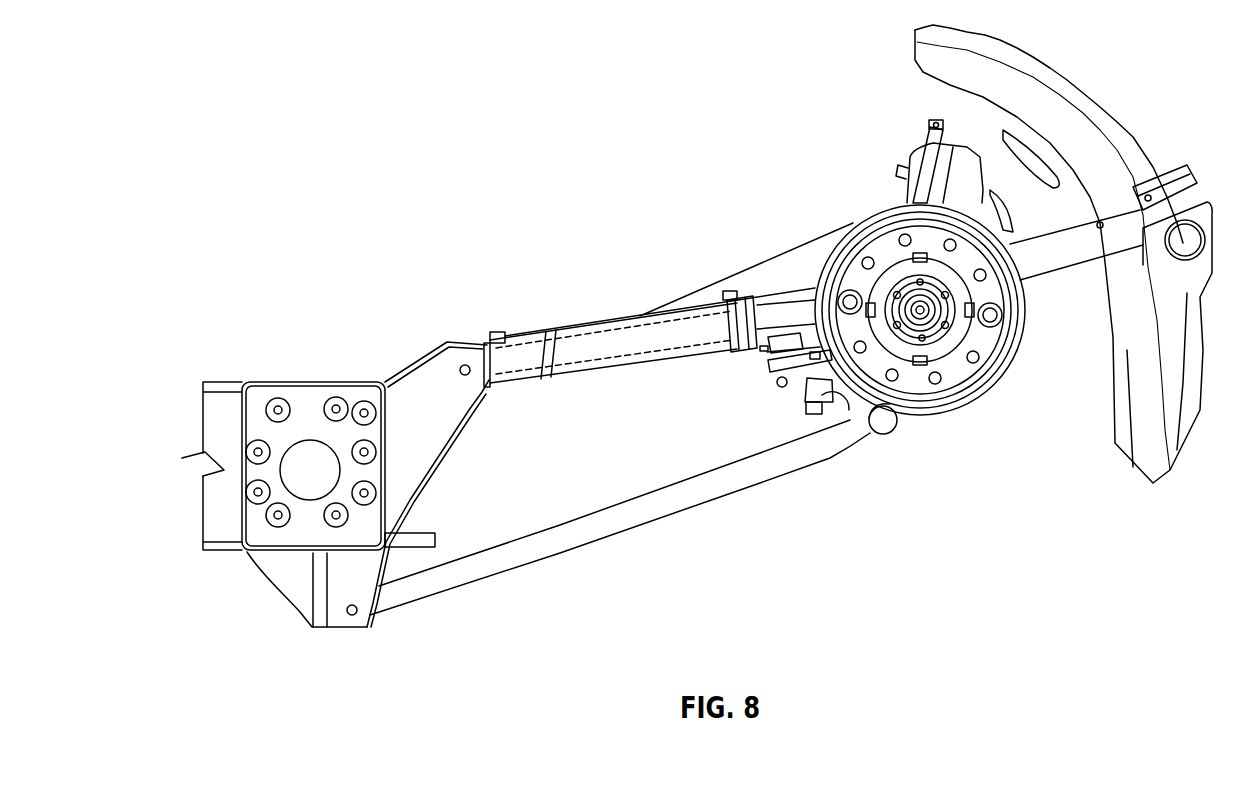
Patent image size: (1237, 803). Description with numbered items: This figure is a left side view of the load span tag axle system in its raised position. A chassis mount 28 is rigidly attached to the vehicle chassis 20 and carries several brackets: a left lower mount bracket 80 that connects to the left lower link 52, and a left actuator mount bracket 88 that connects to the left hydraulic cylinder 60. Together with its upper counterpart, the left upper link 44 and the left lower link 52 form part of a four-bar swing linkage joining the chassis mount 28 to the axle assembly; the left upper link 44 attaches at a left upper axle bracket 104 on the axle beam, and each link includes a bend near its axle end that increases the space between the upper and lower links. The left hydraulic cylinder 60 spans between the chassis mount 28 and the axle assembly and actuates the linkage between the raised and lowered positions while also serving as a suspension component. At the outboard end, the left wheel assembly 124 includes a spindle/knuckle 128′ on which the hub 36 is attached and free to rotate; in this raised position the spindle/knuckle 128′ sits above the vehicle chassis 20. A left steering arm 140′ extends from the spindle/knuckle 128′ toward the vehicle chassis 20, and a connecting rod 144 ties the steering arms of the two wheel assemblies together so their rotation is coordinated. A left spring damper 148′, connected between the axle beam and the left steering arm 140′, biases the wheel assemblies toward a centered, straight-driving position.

The vehicle chassis 20 is at (226, 407).
The chassis mount 28 is at (335, 368).
The hub 36 is at (1005, 357).
The left upper link 44 is at (748, 277).
The left lower link 52 is at (627, 528).
The left hydraulic cylinder 60 is at (617, 358).
The left lower mount bracket 80 is at (337, 617).
The left actuator mount bracket 88 is at (462, 350).
The left upper axle bracket 104 is at (1060, 212).
The left wheel assembly 124 is at (908, 432).
The spindle/knuckle 128′ is at (927, 337).
The left steering arm 140′ is at (767, 371).
The connecting rod 144 is at (793, 407).
The left spring damper 148′ is at (853, 425).